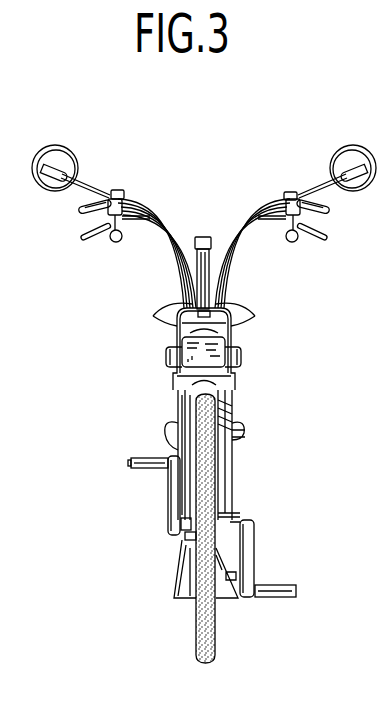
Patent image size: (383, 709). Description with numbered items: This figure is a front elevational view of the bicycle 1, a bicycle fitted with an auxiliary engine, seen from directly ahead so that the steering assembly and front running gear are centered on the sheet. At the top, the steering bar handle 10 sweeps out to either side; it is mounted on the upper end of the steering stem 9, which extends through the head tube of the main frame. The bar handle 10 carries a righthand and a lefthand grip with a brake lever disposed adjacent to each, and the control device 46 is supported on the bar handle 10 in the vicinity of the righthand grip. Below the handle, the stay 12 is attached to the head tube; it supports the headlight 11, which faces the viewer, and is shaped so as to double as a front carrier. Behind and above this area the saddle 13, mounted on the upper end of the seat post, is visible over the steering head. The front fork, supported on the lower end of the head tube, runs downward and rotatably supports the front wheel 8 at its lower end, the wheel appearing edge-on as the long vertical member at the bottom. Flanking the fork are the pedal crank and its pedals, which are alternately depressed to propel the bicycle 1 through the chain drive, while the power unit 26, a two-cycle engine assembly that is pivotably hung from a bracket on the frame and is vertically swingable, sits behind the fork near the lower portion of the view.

The bicycle 1 is at (126, 372).
The front wheel 8 is at (199, 631).
The steering stem 9 is at (212, 282).
The steering bar handle 10 is at (189, 247).
The headlight 11 is at (214, 352).
The stay 12 is at (232, 343).
The saddle 13 is at (161, 315).
The power unit 26 is at (238, 602).
The control device 46 is at (119, 187).